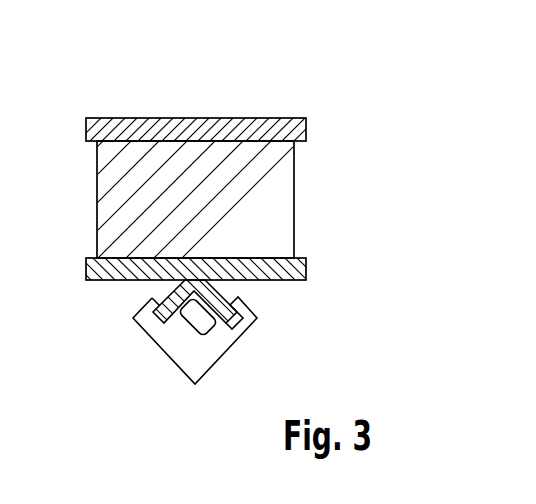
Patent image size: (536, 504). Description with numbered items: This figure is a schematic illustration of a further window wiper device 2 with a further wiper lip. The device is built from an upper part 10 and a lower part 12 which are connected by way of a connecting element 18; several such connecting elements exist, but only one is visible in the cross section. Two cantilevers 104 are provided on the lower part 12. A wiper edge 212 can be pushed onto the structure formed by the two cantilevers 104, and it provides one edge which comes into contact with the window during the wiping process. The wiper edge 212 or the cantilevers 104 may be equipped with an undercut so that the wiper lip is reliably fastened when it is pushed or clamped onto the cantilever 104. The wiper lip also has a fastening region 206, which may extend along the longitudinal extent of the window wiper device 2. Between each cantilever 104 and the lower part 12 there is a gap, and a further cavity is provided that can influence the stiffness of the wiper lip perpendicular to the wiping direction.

The window wiper device 2 is at (185, 227).
The upper part 10 is at (277, 117).
The connecting element 18 is at (287, 193).
The lower part 12 is at (297, 268).
The cantilever 104 is at (213, 305).
The wiper edge 212 is at (182, 352).
The fastening region 206 is at (193, 323).